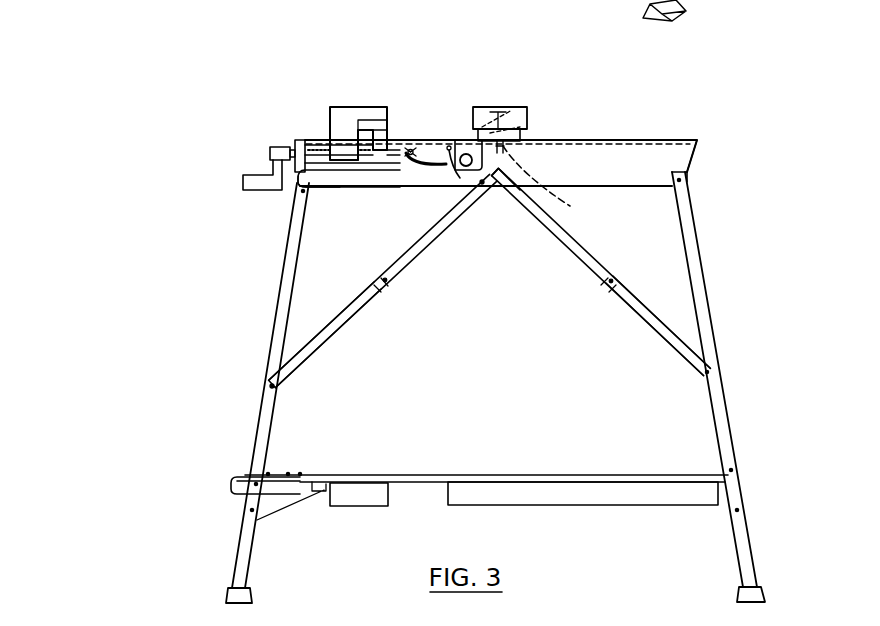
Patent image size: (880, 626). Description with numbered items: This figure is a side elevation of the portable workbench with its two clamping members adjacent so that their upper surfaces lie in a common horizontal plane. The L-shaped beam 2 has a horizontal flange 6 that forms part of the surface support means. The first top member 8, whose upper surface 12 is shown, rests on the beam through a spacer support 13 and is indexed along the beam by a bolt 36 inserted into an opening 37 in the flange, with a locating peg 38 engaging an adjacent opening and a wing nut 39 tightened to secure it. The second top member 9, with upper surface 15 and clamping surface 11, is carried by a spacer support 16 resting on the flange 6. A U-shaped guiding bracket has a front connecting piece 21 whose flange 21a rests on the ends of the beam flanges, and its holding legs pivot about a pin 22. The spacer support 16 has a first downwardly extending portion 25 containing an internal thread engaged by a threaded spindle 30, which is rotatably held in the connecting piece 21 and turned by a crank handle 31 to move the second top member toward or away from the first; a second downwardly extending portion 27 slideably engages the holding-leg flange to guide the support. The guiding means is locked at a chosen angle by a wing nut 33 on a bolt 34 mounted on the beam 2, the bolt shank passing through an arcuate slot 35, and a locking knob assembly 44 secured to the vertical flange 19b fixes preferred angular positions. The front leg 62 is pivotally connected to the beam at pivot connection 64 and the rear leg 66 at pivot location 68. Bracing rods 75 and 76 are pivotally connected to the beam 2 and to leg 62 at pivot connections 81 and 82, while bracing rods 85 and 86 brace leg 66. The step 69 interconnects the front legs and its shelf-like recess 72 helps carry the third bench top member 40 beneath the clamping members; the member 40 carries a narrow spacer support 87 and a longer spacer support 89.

The beam 2 is at (642, 170).
The horizontal flange 6 is at (688, 140).
The first top member 8 is at (525, 128).
The second top member 9 is at (384, 118).
The clamping surface 11 is at (386, 115).
The upper surface 12 is at (500, 106).
The spacer support 13 is at (512, 148).
The upper surface 15 is at (345, 106).
The spacer support 16 is at (327, 111).
The vertical flange 19b is at (482, 184).
The front connecting piece 21 is at (313, 176).
The flange 21a is at (300, 138).
The pin 22 is at (449, 151).
The first downwardly extending portion 25 is at (348, 162).
The second downwardly extending portion 27 is at (390, 156).
The threaded spindle 30 is at (373, 165).
The crank handle 31 is at (252, 183).
The wing nut 33 is at (433, 160).
The bolt 34 is at (412, 149).
The arcuate slot 35 is at (431, 166).
The bolt 36 is at (522, 116).
The opening 37 is at (608, 143).
The locating peg 38 is at (524, 131).
The wing nut 39 is at (546, 184).
The third bench top member 40 is at (590, 475).
The locking knob assembly 44 is at (468, 153).
The articulated leg 62 is at (278, 318).
The pivot connection 64 is at (303, 186).
The articulated leg 66 is at (700, 285).
The pivot location 68 is at (688, 174).
The step 69 is at (232, 481).
The shelf-like recess 72 is at (318, 493).
The bracing rod 75 is at (395, 273).
The bracing rod 76 is at (322, 343).
The pivot connection 81 is at (500, 186).
The pivot connection 82 is at (268, 386).
The bracing rod 85 is at (548, 268).
The bracing rod 86 is at (662, 330).
The spacer support 87 is at (360, 496).
The spacer support 89 is at (612, 496).